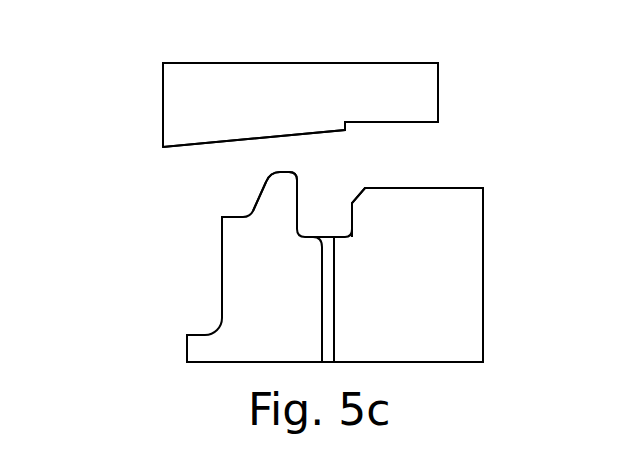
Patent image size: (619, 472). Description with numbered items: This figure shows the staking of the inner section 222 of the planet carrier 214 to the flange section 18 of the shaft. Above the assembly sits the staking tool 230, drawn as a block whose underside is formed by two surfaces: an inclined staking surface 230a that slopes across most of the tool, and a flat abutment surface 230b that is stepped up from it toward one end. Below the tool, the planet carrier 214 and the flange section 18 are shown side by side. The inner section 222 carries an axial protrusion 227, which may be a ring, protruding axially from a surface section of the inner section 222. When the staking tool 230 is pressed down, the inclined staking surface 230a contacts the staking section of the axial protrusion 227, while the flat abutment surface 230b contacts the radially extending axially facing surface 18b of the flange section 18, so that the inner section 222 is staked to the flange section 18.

The flange section 18 is at (466, 240).
The second radially extending axially facing surface 18b is at (440, 188).
The planet carrier 214 is at (274, 267).
The inner section 222 is at (207, 285).
The axial protrusion 227 is at (287, 203).
The staking tool 230 is at (249, 88).
The inclined staking surface 230a is at (278, 137).
The flat abutment surface 230b is at (387, 122).